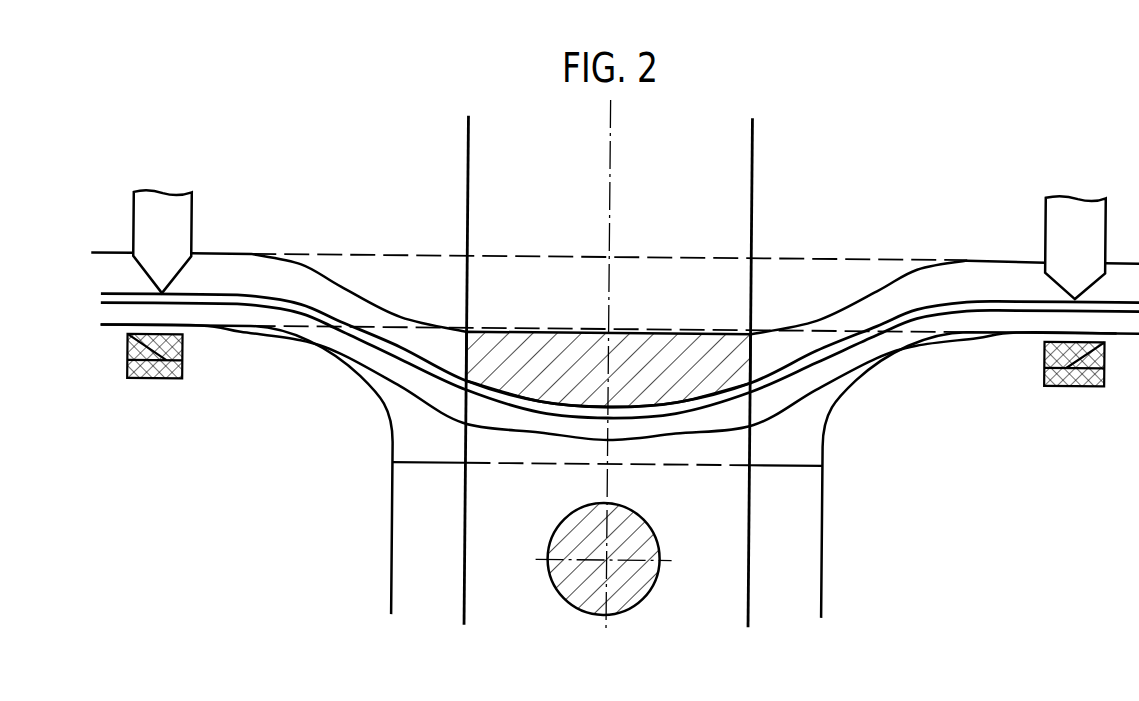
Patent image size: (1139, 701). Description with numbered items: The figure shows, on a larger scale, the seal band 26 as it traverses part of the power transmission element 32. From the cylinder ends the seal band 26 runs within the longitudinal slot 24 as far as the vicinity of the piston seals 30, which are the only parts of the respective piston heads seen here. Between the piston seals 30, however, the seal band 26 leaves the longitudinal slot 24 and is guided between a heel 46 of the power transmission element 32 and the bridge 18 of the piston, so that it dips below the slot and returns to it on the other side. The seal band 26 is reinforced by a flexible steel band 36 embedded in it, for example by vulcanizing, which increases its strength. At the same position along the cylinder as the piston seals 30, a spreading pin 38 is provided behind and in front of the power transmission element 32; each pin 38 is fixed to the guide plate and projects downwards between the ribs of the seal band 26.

The bridge 18 is at (483, 559).
The longitudinal slot 24 is at (402, 267).
The seal band 26 is at (288, 261).
The piston seals 30 is at (170, 384).
The power transmission element 32 is at (740, 169).
The flexible steel band 36 is at (945, 304).
The spreading pin 38 is at (159, 208).
The heel 46 is at (680, 345).